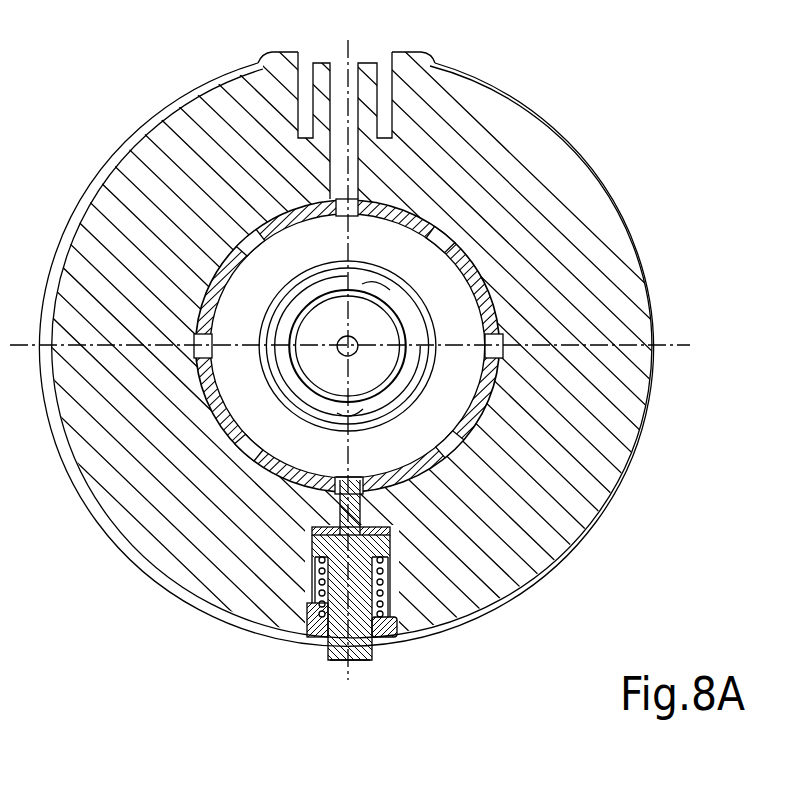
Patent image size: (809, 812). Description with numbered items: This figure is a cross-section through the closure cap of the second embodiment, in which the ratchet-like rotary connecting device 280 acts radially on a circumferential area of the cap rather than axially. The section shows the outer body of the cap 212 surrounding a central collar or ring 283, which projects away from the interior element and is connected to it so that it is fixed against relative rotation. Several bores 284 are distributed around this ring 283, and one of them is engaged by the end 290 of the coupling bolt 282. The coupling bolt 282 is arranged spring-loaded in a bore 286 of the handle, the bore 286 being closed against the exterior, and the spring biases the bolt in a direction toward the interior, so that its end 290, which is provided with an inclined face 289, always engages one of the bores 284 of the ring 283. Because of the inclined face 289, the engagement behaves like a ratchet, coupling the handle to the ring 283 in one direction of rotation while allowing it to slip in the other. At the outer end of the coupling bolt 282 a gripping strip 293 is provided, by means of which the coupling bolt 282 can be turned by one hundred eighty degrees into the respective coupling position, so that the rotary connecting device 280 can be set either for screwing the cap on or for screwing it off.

The rotor disc 212 is at (510, 146).
The bore 284 is at (503, 336).
The collar or ring 283 is at (492, 402).
The end of the coupling bolt 290 is at (362, 503).
The bore of the handle 286 is at (393, 603).
The coupling bolt 282 is at (376, 654).
The gripping strip 293 is at (335, 663).
The ratchet-like rotary connecting device 280 is at (321, 642).
The inclined face 289 is at (347, 483).